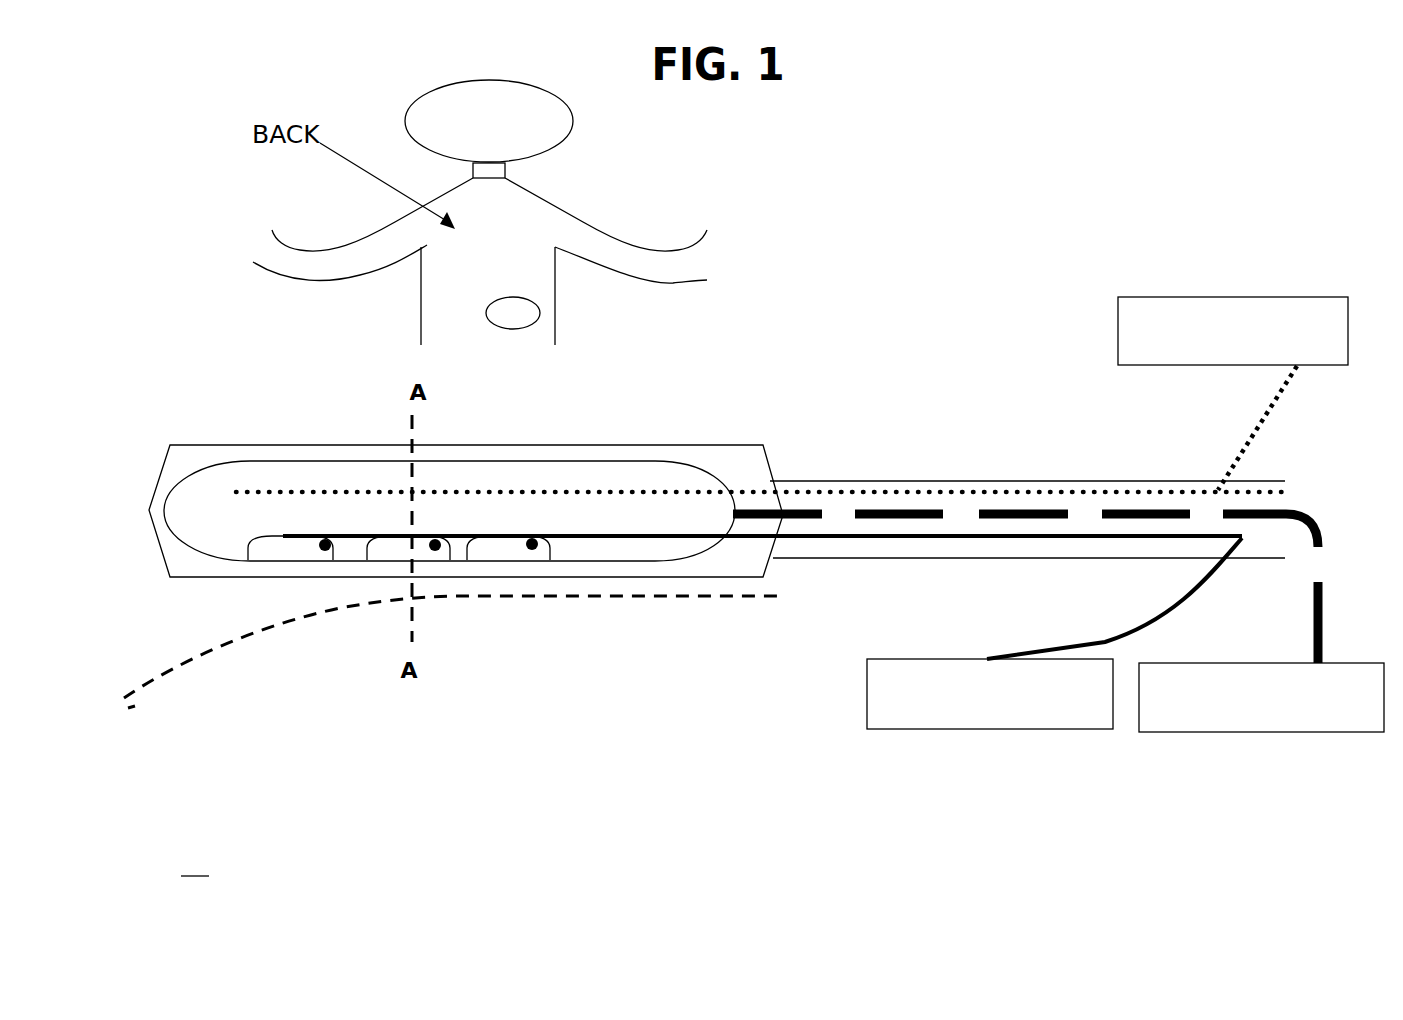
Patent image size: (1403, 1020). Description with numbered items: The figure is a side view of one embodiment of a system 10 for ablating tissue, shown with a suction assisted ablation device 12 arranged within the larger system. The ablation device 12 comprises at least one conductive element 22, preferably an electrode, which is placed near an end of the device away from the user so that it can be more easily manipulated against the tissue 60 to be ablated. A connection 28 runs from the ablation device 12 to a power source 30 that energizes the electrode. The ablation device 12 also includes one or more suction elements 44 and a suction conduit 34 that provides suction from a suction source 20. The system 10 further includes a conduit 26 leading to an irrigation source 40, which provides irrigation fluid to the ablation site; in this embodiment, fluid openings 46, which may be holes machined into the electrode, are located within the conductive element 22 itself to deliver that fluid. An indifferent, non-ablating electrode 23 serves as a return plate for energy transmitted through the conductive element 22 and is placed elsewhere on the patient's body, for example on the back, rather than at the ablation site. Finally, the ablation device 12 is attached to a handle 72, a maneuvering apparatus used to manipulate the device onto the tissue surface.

The system 10 is at (195, 864).
The ablation device 12 is at (817, 438).
The suction source 20 is at (990, 694).
The conductive element 22 is at (173, 497).
The indifferent electrode 23 is at (520, 313).
The conduit 26 is at (938, 490).
The connection 28 is at (1038, 512).
The power source 30 is at (327, 551).
The suction conduit 34 is at (882, 540).
The irrigation source 40 is at (1233, 331).
The suction elements 44 is at (507, 553).
The fluid openings 46 is at (300, 490).
The tissue 60 is at (451, 652).
The handle 72 is at (1168, 481).